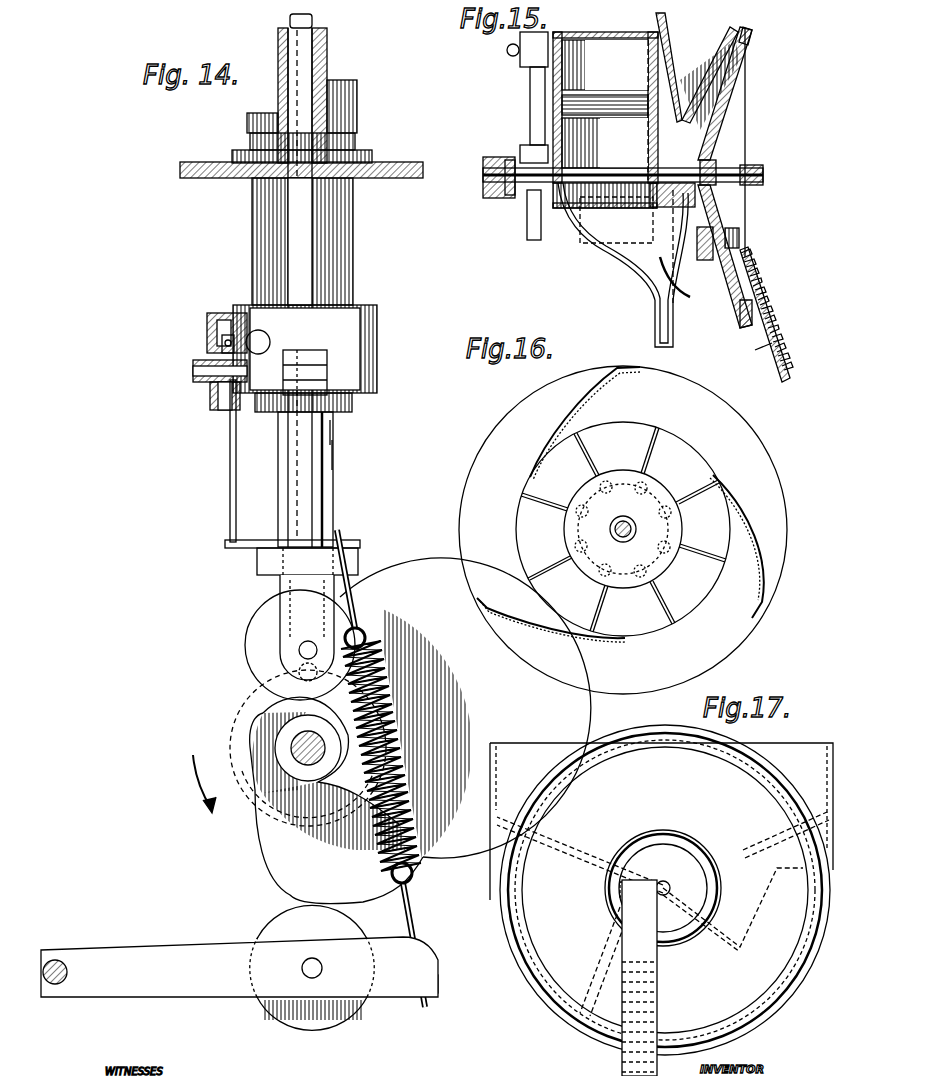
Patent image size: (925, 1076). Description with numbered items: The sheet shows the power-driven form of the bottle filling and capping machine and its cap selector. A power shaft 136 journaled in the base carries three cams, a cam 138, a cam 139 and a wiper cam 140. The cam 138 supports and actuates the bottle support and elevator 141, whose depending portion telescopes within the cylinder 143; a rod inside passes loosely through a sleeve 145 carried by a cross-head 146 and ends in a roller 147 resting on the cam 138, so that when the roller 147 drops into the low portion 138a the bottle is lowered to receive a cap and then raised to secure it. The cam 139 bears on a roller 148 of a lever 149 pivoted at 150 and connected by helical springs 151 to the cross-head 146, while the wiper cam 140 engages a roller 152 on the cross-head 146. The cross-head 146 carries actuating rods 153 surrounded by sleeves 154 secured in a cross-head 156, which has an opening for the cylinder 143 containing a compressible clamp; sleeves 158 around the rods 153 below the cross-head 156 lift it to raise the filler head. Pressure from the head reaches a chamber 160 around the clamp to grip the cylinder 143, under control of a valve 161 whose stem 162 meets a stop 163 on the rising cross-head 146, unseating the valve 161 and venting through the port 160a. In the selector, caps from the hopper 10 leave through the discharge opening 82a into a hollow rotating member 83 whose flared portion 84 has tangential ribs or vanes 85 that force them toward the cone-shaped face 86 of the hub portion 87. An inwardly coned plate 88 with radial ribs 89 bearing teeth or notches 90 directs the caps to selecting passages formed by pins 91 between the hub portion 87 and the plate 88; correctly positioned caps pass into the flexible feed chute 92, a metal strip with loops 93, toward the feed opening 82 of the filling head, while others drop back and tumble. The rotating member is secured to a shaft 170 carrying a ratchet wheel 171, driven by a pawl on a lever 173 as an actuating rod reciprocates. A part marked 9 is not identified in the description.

In FIG. 15, the bracket 9 is at (520, 196).
In FIG. 15, the hopper 10 is at (624, 120).
In FIG. 17, the hopper 10 is at (661, 890).
In FIG. 17, the feed opening 82 is at (663, 914).
In FIG. 15, the discharge opening 82a is at (612, 270).
In FIG. 15, the hollow rotating member 83 is at (686, 58).
In FIG. 15, the open flared portion 84 is at (658, 25).
In FIG. 15, the ribs or vanes 85 is at (652, 50).
In FIG. 16, the ribs or vanes 85 is at (755, 540).
In FIG. 15, the cone-shaped face 86 is at (690, 204).
In FIG. 15, the hub portion 87 is at (718, 201).
In FIG. 16, the hub portion 87 is at (623, 529).
In FIG. 15, the coned plate 88 is at (735, 222).
In FIG. 15, the radial ribs 89 is at (740, 261).
In FIG. 16, the radial ribs 89 is at (557, 500).
In FIG. 15, the teeth or notches 90 is at (720, 88).
In FIG. 16, the teeth or notches 90 is at (645, 452).
In FIG. 15, the pins 91 is at (710, 162).
In FIG. 16, the pins 91 is at (660, 492).
In FIG. 15, the feed chute 92 is at (760, 342).
In FIG. 17, the feed chute 92 is at (655, 985).
In FIG. 15, the loops 93 is at (760, 354).
In FIG. 14, the power shaft 136 is at (305, 762).
In FIG. 14, the cam 138 is at (245, 731).
In FIG. 14, the low portion 138a is at (275, 692).
In FIG. 14, the cam 139 is at (380, 734).
In FIG. 14, the wiper cam 140 is at (415, 832).
In FIG. 14, the bottle support and elevator 141 is at (357, 99).
In FIG. 14, the cylinder 143 is at (353, 222).
In FIG. 14, the sleeve 145 is at (333, 454).
In FIG. 14, the cross-head 146 is at (257, 567).
In FIG. 14, the roller 147 is at (285, 675).
In FIG. 14, the roller 148 is at (320, 1027).
In FIG. 14, the lever 149 is at (210, 985).
In FIG. 14, the pivot 150 is at (56, 985).
In FIG. 14, the helical springs 151 is at (360, 698).
In FIG. 14, the roller 152 is at (246, 632).
In FIG. 14, the actuating rods 153 is at (333, 431).
In FIG. 14, the sleeves 154 is at (318, 258).
In FIG. 14, the cross-head 156 is at (327, 375).
In FIG. 14, the sleeves 158 is at (305, 490).
In FIG. 14, the chamber 160 is at (210, 335).
In FIG. 14, the port 160a is at (200, 372).
In FIG. 14, the valve 161 is at (222, 350).
In FIG. 14, the valve stem 162 is at (228, 448).
In FIG. 14, the stop 163 is at (225, 546).
In FIG. 15, the shaft 170 is at (582, 242).
In FIG. 15, the ratchet wheel 171 is at (492, 162).
In FIG. 15, the lever 173 is at (509, 160).